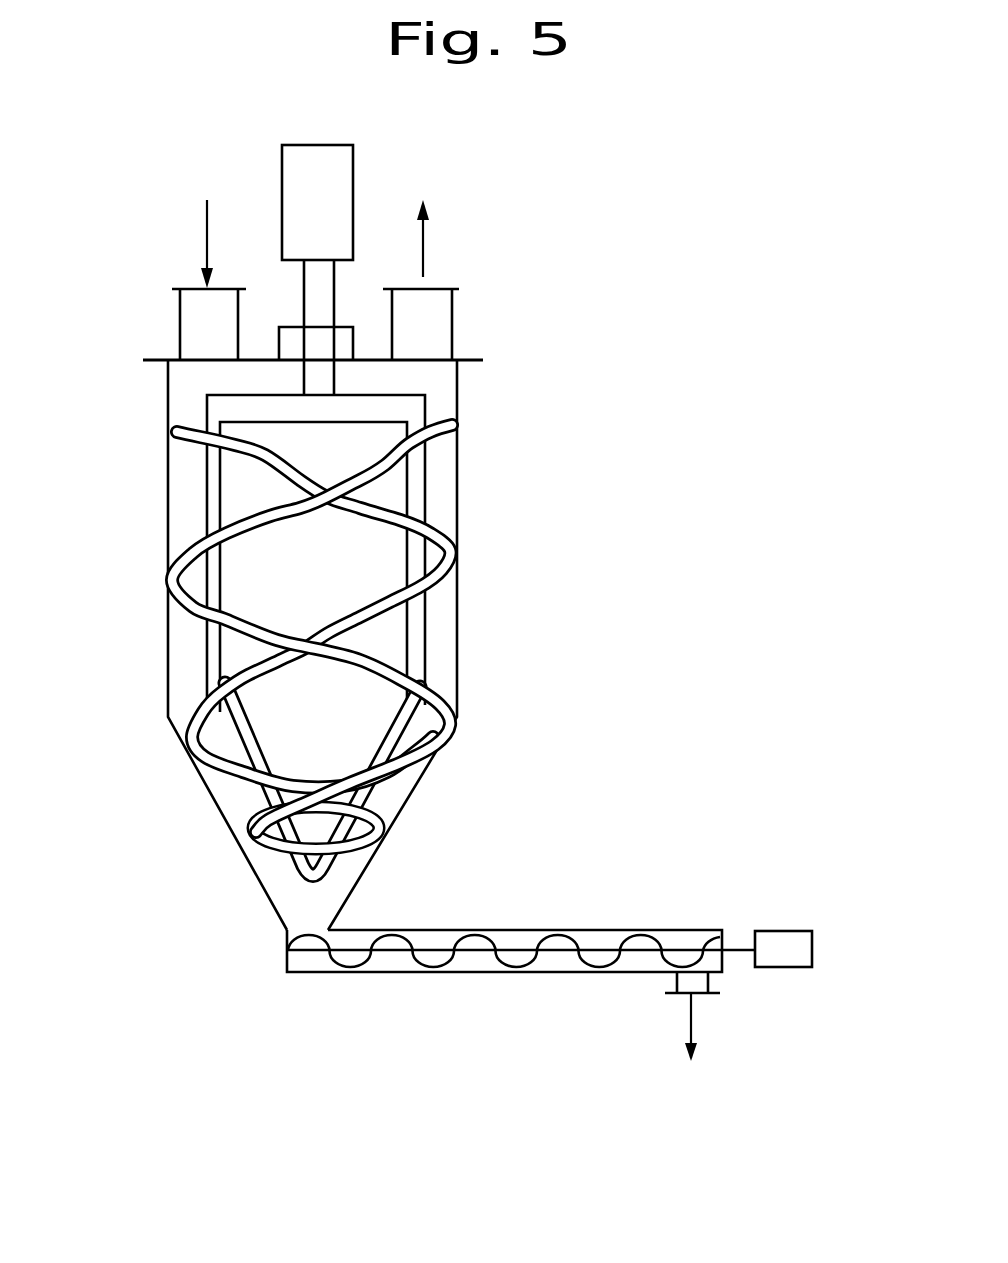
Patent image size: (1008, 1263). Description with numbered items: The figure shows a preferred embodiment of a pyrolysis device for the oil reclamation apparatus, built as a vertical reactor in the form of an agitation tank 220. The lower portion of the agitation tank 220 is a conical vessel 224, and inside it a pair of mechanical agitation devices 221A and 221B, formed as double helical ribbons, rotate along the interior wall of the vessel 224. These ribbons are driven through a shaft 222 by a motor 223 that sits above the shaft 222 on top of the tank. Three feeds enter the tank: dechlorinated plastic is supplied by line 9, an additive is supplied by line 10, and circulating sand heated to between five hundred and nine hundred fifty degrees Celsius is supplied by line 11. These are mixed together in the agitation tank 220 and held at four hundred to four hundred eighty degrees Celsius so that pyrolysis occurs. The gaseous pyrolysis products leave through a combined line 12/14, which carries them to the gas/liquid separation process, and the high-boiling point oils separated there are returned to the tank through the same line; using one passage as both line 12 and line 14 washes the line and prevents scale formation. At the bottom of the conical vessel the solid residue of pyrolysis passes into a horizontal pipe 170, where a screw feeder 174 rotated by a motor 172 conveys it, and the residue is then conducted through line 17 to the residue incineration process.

The agitation tank 220 is at (458, 545).
The mechanical agitation device 221A is at (455, 723).
The mechanical agitation device 221B is at (202, 748).
The shaft 222 is at (300, 288).
The motor 223 is at (355, 164).
The conical vessel 224 is at (407, 813).
The pipe 170 is at (487, 973).
The motor 172 is at (812, 950).
The screw feeder 174 is at (590, 940).
The line 17 is at (691, 1025).
The line 9 is at (150, 280).
The line 10 is at (150, 280).
The line 11 is at (205, 236).
The line 12 is at (475, 280).
The line 14 is at (426, 252).